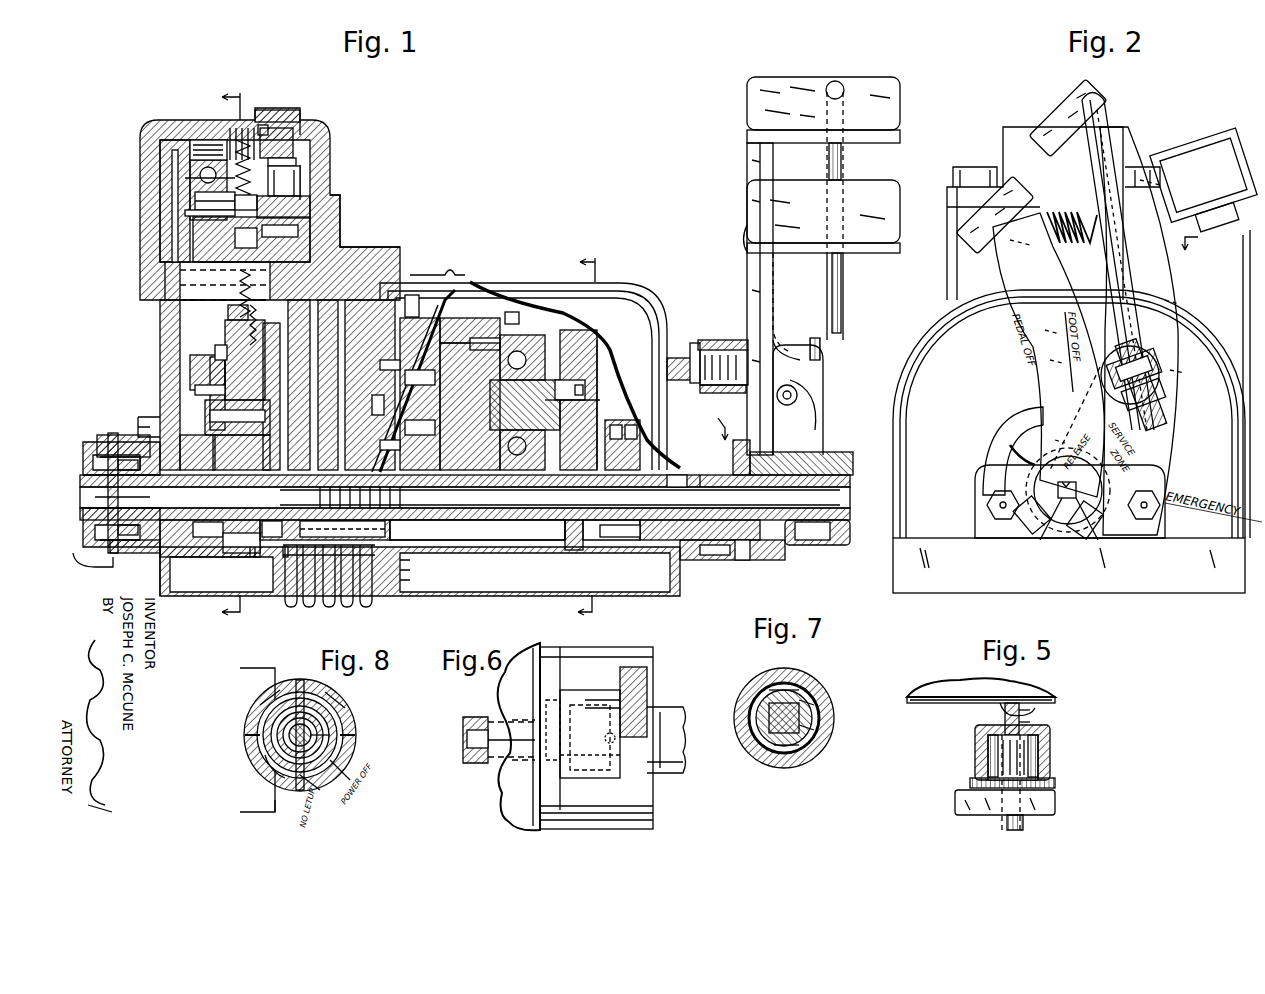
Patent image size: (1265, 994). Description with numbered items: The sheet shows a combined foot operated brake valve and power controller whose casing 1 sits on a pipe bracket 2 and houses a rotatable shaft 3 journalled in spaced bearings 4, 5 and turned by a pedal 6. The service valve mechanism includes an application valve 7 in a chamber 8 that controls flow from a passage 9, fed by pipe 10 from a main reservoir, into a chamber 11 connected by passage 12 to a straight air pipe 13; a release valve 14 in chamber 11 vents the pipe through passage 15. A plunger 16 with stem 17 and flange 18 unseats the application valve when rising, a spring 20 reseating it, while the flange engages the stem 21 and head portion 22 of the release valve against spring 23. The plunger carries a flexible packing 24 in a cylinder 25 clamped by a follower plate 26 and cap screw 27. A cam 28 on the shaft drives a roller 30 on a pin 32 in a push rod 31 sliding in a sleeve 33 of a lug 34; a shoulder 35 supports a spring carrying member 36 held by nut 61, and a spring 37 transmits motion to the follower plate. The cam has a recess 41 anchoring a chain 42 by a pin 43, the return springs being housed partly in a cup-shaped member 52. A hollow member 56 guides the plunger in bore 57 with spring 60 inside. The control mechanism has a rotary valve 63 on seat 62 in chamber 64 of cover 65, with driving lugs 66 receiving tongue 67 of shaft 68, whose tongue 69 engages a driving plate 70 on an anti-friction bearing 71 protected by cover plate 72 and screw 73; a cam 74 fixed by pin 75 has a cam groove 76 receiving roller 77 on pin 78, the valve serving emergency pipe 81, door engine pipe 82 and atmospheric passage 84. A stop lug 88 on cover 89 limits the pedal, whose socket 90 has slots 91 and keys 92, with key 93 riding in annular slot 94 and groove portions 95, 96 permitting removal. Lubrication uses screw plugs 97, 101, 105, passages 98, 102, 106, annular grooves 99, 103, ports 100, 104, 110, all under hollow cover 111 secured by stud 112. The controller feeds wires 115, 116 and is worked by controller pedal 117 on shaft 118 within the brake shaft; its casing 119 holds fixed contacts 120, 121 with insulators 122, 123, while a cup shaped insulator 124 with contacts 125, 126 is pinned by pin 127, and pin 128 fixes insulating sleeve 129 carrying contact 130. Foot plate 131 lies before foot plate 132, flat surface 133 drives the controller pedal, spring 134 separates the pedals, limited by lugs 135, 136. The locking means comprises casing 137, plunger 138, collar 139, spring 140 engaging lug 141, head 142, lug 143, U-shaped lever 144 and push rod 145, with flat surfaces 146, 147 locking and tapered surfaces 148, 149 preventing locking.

In FIG. 1, the casing 1 is at (365, 255).
In FIG. 2, the casing 1 is at (948, 267).
In FIG. 1, the pipe bracket 2 is at (212, 598).
In FIG. 2, the pipe bracket 2 is at (893, 575).
In FIG. 1, the rotatable shaft 3 is at (341, 353).
In FIG. 6, the rotatable shaft 3 is at (525, 765).
In FIG. 7, the rotatable shaft 3 is at (760, 735).
In FIG. 1, the bearing 4 is at (505, 437).
In FIG. 1, the bearing 5 is at (672, 551).
In FIG. 2, the bearing 5 is at (1197, 239).
In FIG. 1, the pedal 6 is at (760, 155).
In FIG. 2, the pedal 6 is at (1112, 150).
In FIG. 6, the pedal 6 is at (648, 690).
In FIG. 5, the pedal 6 is at (1048, 804).
In FIG. 1, the application valve 7 is at (305, 152).
In FIG. 1, the chamber 8 is at (292, 148).
In FIG. 1, the passage 9 is at (312, 165).
In FIG. 1, the pipe 10 is at (290, 603).
In FIG. 1, the chamber 11 is at (298, 182).
In FIG. 1, the passage 12 is at (172, 258).
In FIG. 1, the straight air pipe 13 is at (325, 603).
In FIG. 1, the release valve 14 is at (190, 165).
In FIG. 1, the passage 15 is at (160, 155).
In FIG. 1, the plunger 16 is at (170, 270).
In FIG. 1, the stem 17 is at (300, 207).
In FIG. 1, the flange 18 is at (185, 220).
In FIG. 1, the spring 20 is at (298, 128).
In FIG. 1, the stem 21 is at (185, 200).
In FIG. 1, the head portion 22 is at (180, 215).
In FIG. 1, the spring 23 is at (195, 180).
In FIG. 1, the flexible packing 24 is at (300, 240).
In FIG. 1, the cylinder 25 is at (310, 215).
In FIG. 1, the follower plate 26 is at (215, 260).
In FIG. 1, the cap screw 27 is at (215, 275).
In FIG. 1, the cam 28 is at (222, 463).
In FIG. 1, the roller 30 is at (465, 495).
In FIG. 1, the push rod 31 is at (230, 405).
In FIG. 1, the pin 32 is at (208, 425).
In FIG. 1, the sleeve 33 is at (205, 372).
In FIG. 1, the lug 34 is at (212, 388).
In FIG. 1, the shoulder 35 is at (215, 358).
In FIG. 1, the spring carrying member 36 is at (220, 340).
In FIG. 1, the spring 37 is at (230, 315).
In FIG. 1, the recess 41 is at (248, 560).
In FIG. 1, the chain 42 is at (325, 529).
In FIG. 1, the pin 43 is at (232, 528).
In FIG. 2, the cup-shaped member 52 is at (1198, 165).
In FIG. 1, the hollow sleeve like member 56 is at (232, 150).
In FIG. 1, the bore 57 is at (265, 135).
In FIG. 1, the spring 60 is at (262, 130).
In FIG. 1, the nut 61 is at (225, 325).
In FIG. 1, the seat 62 is at (450, 345).
In FIG. 1, the rotary valve 63 is at (470, 320).
In FIG. 1, the chamber 64 is at (490, 335).
In FIG. 1, the cover 65 is at (515, 315).
In FIG. 1, the driving lugs 66 is at (388, 377).
In FIG. 1, the driving tongue 67 is at (386, 438).
In FIG. 1, the shaft 68 is at (535, 410).
In FIG. 1, the driving tongue 69 is at (520, 355).
In FIG. 1, the driving plate 70 is at (557, 345).
In FIG. 1, the anti-friction bearing 71 is at (520, 350).
In FIG. 1, the cover plate 72 is at (500, 445).
In FIG. 1, the screw 73 is at (530, 330).
In FIG. 1, the cam 74 is at (580, 420).
In FIG. 1, the pin 75 is at (575, 548).
In FIG. 1, the cam groove 76 is at (575, 385).
In FIG. 1, the roller 77 is at (582, 362).
In FIG. 1, the pin 78 is at (580, 380).
In FIG. 1, the emergency pipe 81 is at (347, 603).
In FIG. 1, the door engine pipe 82 is at (368, 603).
In FIG. 1, the atmospheric passage 84 is at (400, 572).
In FIG. 2, the stop lug 88 is at (1005, 440).
In FIG. 6, the stop lug 88 is at (655, 787).
In FIG. 1, the cover 89 is at (683, 548).
In FIG. 2, the cover 89 is at (990, 485).
In FIG. 6, the cover 89 is at (558, 668).
In FIG. 7, the cover 89 is at (745, 718).
In FIG. 1, the socket 90 is at (718, 548).
In FIG. 6, the socket 90 is at (603, 705).
In FIG. 7, the socket 90 is at (788, 765).
In FIG. 7, the slots 91 is at (815, 700).
In FIG. 7, the keys 92 is at (830, 728).
In FIG. 1, the key 93 is at (740, 455).
In FIG. 6, the key 93 is at (632, 735).
In FIG. 1, the annular slot 94 is at (740, 548).
In FIG. 6, the annular slot 94 is at (633, 705).
In FIG. 1, the groove portion 95 is at (720, 478).
In FIG. 6, the groove portion 95 is at (592, 760).
In FIG. 7, the groove portion 95 is at (795, 690).
In FIG. 1, the groove portion 96 is at (676, 480).
In FIG. 6, the groove portion 96 is at (552, 735).
In FIG. 1, the screw plug 97 is at (625, 420).
In FIG. 1, the passage 98 is at (629, 438).
In FIG. 1, the annular groove 99 is at (643, 445).
In FIG. 1, the port 100 is at (622, 548).
In FIG. 1, the screw plug 101 is at (385, 300).
In FIG. 1, the passage 102 is at (378, 385).
In FIG. 1, the annular groove 103 is at (387, 399).
In FIG. 1, the port 104 is at (269, 560).
In FIG. 1, the screw plug 105 is at (470, 320).
In FIG. 1, the passage 106 is at (525, 405).
In FIG. 1, the port 110 is at (190, 150).
In FIG. 1, the hollow cover 111 is at (625, 300).
In FIG. 2, the hollow cover 111 is at (937, 340).
In FIG. 6, the hollow cover 111 is at (535, 655).
In FIG. 5, the hollow cover 111 is at (925, 705).
In FIG. 1, the stud 112 is at (440, 275).
In FIG. 1, the wire 115 is at (118, 440).
In FIG. 8, the wire 115 is at (275, 678).
In FIG. 1, the wire 116 is at (110, 560).
In FIG. 8, the wire 116 is at (270, 812).
In FIG. 1, the controller pedal 117 is at (782, 335).
In FIG. 2, the controller pedal 117 is at (1022, 265).
In FIG. 1, the controller shaft 118 is at (180, 508).
In FIG. 2, the controller shaft 118 is at (1062, 500).
In FIG. 8, the controller shaft 118 is at (330, 728).
In FIG. 6, the controller shaft 118 is at (480, 760).
In FIG. 7, the controller shaft 118 is at (775, 745).
In FIG. 1, the casing 119 is at (90, 448).
In FIG. 8, the casing 119 is at (250, 740).
In FIG. 1, the fixed contact 120 is at (118, 437).
In FIG. 8, the fixed contact 120 is at (270, 698).
In FIG. 1, the fixed contact 121 is at (120, 548).
In FIG. 8, the fixed contact 121 is at (255, 768).
In FIG. 1, the insulator 122 is at (95, 440).
In FIG. 8, the insulator 122 is at (255, 715).
In FIG. 1, the insulator 123 is at (93, 548).
In FIG. 8, the insulator 123 is at (252, 752).
In FIG. 1, the cup shaped insulator 124 is at (95, 455).
In FIG. 8, the cup shaped insulator 124 is at (252, 727).
In FIG. 1, the contact 125 is at (95, 470).
In FIG. 8, the contact 125 is at (340, 705).
In FIG. 8, the contact 126 is at (272, 778).
In FIG. 1, the pin 127 is at (134, 492).
In FIG. 8, the pin 128 is at (350, 785).
In FIG. 1, the insulating sleeve 129 is at (95, 518).
In FIG. 8, the insulating sleeve 129 is at (292, 700).
In FIG. 1, the contact 130 is at (95, 528).
In FIG. 8, the contact 130 is at (340, 732).
In FIG. 1, the foot plate 131 is at (880, 210).
In FIG. 2, the foot plate 131 is at (965, 210).
In FIG. 1, the foot plate 132 is at (880, 120).
In FIG. 2, the foot plate 132 is at (1058, 115).
In FIG. 2, the flat surface 133 is at (1075, 520).
In FIG. 1, the spring 134 is at (745, 240).
In FIG. 2, the spring 134 is at (1065, 210).
In FIG. 1, the lug 135 is at (822, 548).
In FIG. 2, the lug 135 is at (1063, 520).
In FIG. 1, the lug 136 is at (838, 540).
In FIG. 2, the lug 136 is at (1028, 520).
In FIG. 1, the hollow casing 137 is at (715, 340).
In FIG. 2, the hollow casing 137 is at (1165, 367).
In FIG. 5, the hollow casing 137 is at (975, 760).
In FIG. 1, the plunger 138 is at (720, 340).
In FIG. 5, the plunger 138 is at (1035, 770).
In FIG. 1, the collar 139 is at (705, 360).
In FIG. 5, the collar 139 is at (1035, 755).
In FIG. 1, the spring 140 is at (735, 345).
In FIG. 5, the spring 140 is at (990, 750).
In FIG. 1, the lug 141 is at (668, 372).
In FIG. 5, the lug 141 is at (1040, 715).
In FIG. 1, the head 142 is at (812, 340).
In FIG. 2, the head 142 is at (1160, 340).
In FIG. 1, the lug 143 is at (783, 408).
In FIG. 2, the lug 143 is at (1163, 392).
In FIG. 1, the U-shaped lever 144 is at (801, 460).
In FIG. 2, the U-shaped lever 144 is at (1155, 422).
In FIG. 1, the push rod 145 is at (830, 160).
In FIG. 2, the push rod 145 is at (1115, 275).
In FIG. 5, the flat surface 146 is at (1040, 725).
In FIG. 5, the flat surface 147 is at (995, 695).
In FIG. 5, the tapered surface 148 is at (1030, 718).
In FIG. 1, the tapered surface 149 is at (688, 345).
In FIG. 5, the tapered surface 149 is at (1000, 723).